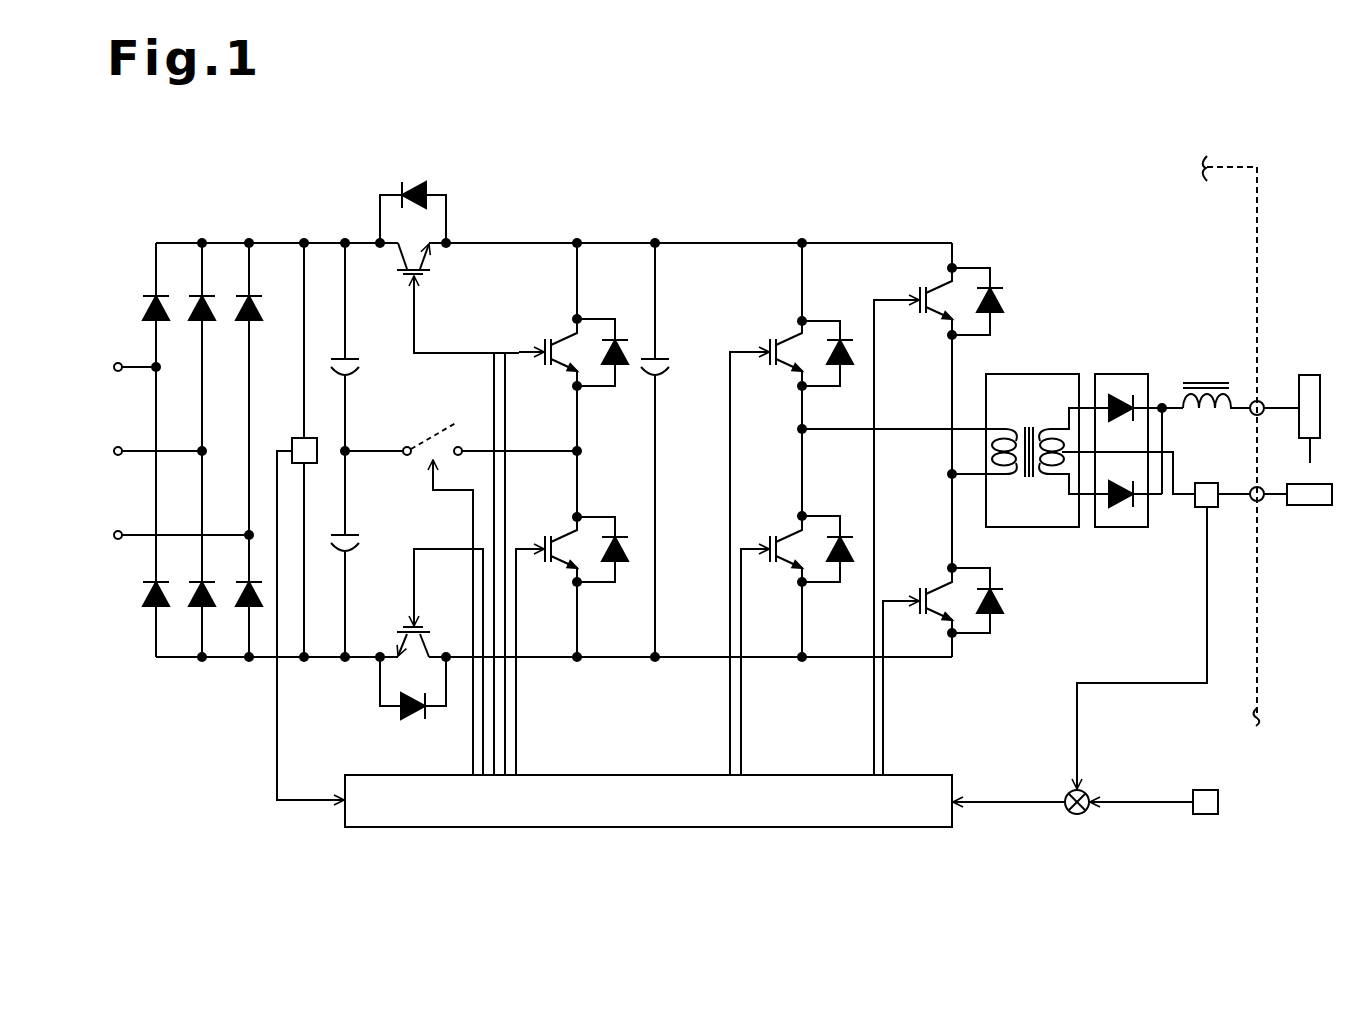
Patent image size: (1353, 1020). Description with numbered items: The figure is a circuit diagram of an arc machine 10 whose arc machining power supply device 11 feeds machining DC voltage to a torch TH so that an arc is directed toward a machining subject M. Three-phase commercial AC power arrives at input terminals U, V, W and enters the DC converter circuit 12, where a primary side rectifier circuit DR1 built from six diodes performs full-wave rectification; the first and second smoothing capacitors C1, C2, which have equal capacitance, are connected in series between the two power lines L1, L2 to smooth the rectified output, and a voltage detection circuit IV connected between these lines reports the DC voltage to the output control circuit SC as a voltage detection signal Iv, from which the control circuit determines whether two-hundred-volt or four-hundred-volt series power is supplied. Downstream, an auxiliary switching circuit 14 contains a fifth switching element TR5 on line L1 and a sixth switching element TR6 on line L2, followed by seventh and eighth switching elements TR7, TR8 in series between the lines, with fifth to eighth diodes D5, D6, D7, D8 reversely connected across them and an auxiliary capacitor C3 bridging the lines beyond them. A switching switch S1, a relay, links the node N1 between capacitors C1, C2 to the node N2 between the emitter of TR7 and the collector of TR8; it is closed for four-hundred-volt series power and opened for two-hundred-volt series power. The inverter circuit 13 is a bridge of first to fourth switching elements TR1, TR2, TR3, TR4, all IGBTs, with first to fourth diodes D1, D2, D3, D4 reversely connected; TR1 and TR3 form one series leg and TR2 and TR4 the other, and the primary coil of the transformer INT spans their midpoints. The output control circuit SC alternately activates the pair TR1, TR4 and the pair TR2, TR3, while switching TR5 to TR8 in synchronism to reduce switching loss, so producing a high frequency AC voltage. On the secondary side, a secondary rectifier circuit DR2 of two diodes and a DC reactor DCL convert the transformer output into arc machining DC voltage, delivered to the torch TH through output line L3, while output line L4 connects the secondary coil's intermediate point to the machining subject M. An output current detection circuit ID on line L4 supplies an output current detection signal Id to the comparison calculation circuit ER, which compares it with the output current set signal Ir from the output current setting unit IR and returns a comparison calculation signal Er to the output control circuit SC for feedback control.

The arc machine 10 is at (1292, 150).
The arc machining power supply device 11 is at (1257, 212).
The DC converter circuit 12 is at (297, 214).
The inverter circuit 13 is at (894, 213).
The auxiliary switching circuit 14 is at (538, 203).
The primary side rectifier circuit DR1 is at (250, 240).
The power line L1 is at (318, 243).
The power line L2 is at (315, 661).
The output line L3 is at (1250, 403).
The output line L4 is at (1242, 500).
The first smoothing capacitor C1 is at (352, 368).
The second smoothing capacitor C2 is at (352, 541).
The auxiliary capacitor C3 is at (662, 367).
The voltage detection circuit IV is at (292, 430).
The node N1 is at (349, 448).
The node N2 is at (583, 449).
The switching switch S1 is at (425, 439).
The first diode D1 is at (848, 339).
The second diode D2 is at (997, 292).
The third diode D3 is at (848, 536).
The fourth diode D4 is at (997, 592).
The fifth diode D5 is at (399, 183).
The sixth diode D6 is at (432, 719).
The seventh diode D7 is at (626, 339).
The eighth diode D8 is at (626, 536).
The first switching element TR1 is at (793, 336).
The second switching element TR2 is at (941, 288).
The third switching element TR3 is at (792, 568).
The fourth switching element TR4 is at (940, 588).
The fifth switching element TR5 is at (430, 256).
The sixth switching element TR6 is at (428, 650).
The seventh switching element TR7 is at (548, 338).
The eighth switching element TR8 is at (562, 562).
The transformer INT is at (1030, 374).
The secondary rectifier circuit DR2 is at (1114, 374).
The DC reactor DCL is at (1215, 380).
The torch TH is at (1310, 375).
The output current detection circuit ID is at (1208, 483).
The machining subject M is at (1310, 507).
The output control circuit SC is at (648, 801).
The voltage detection signal Iv is at (310, 626).
The comparison calculation signal Er is at (1009, 786).
The output current set signal Ir is at (1141, 786).
The output current detection signal Id is at (1142, 648).
The comparison calculation circuit ER is at (1077, 815).
The output current setting unit IR is at (1206, 790).
The AC input terminal U is at (127, 367).
The AC input terminal V is at (150, 451).
The AC input terminal W is at (172, 535).